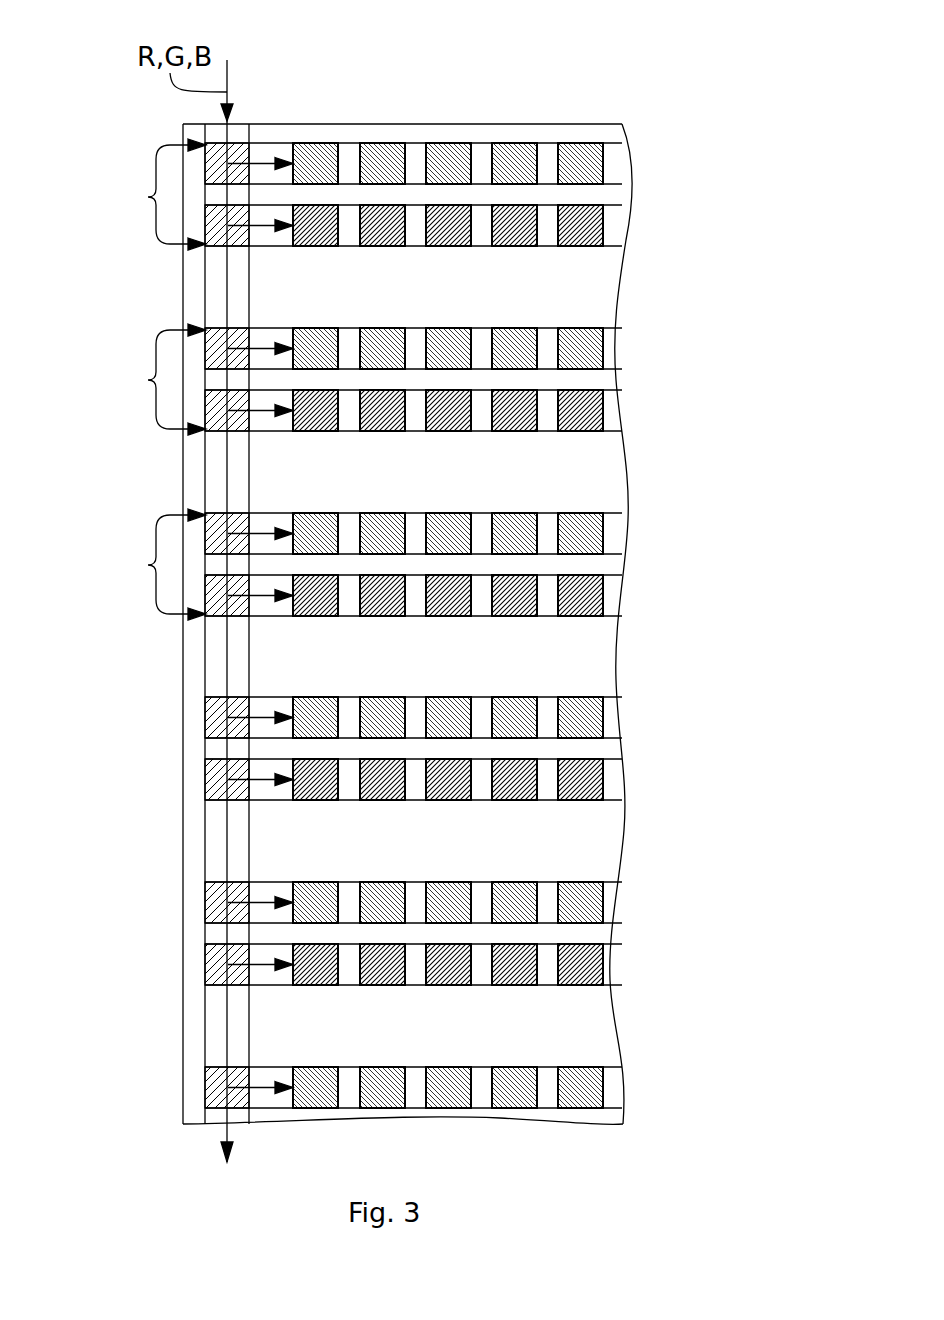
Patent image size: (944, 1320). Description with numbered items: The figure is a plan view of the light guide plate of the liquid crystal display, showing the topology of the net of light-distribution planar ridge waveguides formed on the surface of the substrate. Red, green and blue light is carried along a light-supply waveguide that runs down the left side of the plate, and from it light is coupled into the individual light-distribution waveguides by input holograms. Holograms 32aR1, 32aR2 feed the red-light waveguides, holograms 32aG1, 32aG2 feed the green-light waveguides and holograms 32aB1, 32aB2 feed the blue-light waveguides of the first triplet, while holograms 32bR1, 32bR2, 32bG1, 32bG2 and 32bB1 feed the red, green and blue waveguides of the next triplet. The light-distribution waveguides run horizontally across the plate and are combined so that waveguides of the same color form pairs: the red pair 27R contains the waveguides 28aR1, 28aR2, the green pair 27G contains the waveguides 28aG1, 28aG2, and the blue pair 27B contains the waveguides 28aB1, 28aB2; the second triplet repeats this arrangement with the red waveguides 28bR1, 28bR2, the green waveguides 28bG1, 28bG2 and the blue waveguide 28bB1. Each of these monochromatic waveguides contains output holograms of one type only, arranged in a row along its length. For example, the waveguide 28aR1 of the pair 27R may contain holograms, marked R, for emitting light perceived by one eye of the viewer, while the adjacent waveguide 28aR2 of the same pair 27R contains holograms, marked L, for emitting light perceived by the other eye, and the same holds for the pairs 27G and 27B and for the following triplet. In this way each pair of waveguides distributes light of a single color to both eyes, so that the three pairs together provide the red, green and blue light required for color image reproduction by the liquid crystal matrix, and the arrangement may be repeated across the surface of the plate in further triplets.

The pair of red light-distribution waveguides 27R is at (148, 197).
The pair of green light-distribution waveguides 27G is at (148, 380).
The pair of blue light-distribution waveguides 27B is at (148, 565).
The hologram 32aR1 is at (233, 158).
The hologram 32aR2 is at (222, 238).
The hologram 32aG1 is at (215, 336).
The hologram 32aG2 is at (220, 423).
The hologram 32aB1 is at (217, 522).
The hologram 32aB2 is at (222, 605).
The hologram 32bR1 is at (215, 714).
The hologram 32bR2 is at (215, 780).
The hologram 32bG1 is at (215, 899).
The hologram 32bG2 is at (215, 965).
The hologram 32bB1 is at (215, 1087).
The light-distribution waveguide 28aR1 is at (616, 170).
The light-distribution waveguide 28aR2 is at (616, 215).
The light-distribution waveguide 28aG1 is at (616, 355).
The light-distribution waveguide 28aG2 is at (616, 400).
The light-distribution waveguide 28aB1 is at (616, 540).
The light-distribution waveguide 28aB2 is at (616, 585).
The light-distribution waveguide 28bR1 is at (616, 724).
The light-distribution waveguide 28bR2 is at (616, 769).
The light-distribution waveguide 28bG1 is at (616, 909).
The light-distribution waveguide 28bG2 is at (616, 954).
The light-distribution waveguide 28bB1 is at (616, 1090).